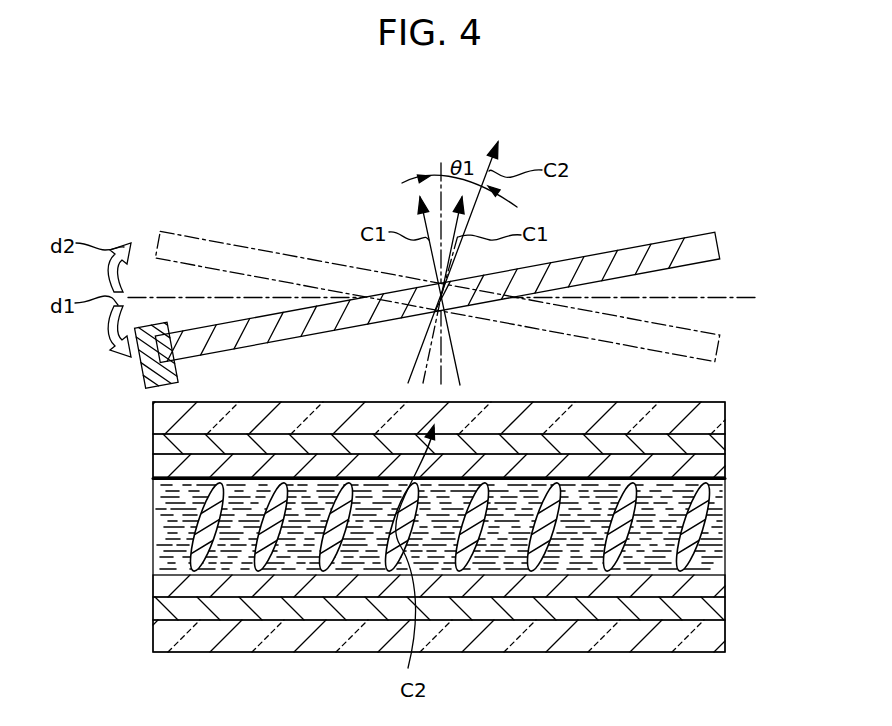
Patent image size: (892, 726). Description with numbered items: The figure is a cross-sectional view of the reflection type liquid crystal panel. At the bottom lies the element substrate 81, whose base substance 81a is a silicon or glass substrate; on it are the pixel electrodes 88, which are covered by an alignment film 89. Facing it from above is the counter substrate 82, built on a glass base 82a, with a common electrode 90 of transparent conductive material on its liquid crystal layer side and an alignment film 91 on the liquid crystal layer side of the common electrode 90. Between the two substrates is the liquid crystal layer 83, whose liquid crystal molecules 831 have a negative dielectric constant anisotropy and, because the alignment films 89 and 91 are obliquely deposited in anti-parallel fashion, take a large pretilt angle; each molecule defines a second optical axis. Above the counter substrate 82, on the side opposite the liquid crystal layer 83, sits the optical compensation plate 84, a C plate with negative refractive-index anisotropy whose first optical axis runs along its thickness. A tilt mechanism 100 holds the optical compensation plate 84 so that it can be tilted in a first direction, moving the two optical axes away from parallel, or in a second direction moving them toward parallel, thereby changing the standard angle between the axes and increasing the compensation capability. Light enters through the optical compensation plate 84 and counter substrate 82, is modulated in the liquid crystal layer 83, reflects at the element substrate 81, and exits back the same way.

The optical compensation plate 84 is at (198, 256).
The tilt mechanism 100 is at (145, 382).
The counter substrate 82 is at (454, 441).
The base 82a is at (717, 415).
The common electrode 90 is at (707, 443).
The alignment film 91 is at (713, 463).
The liquid crystal layer 83 is at (454, 526).
The liquid crystal molecules 831 is at (705, 522).
The element substrate 81 is at (454, 612).
The alignment film 89 is at (713, 587).
The pixel electrodes 88 is at (708, 602).
The base substance 81a is at (708, 637).